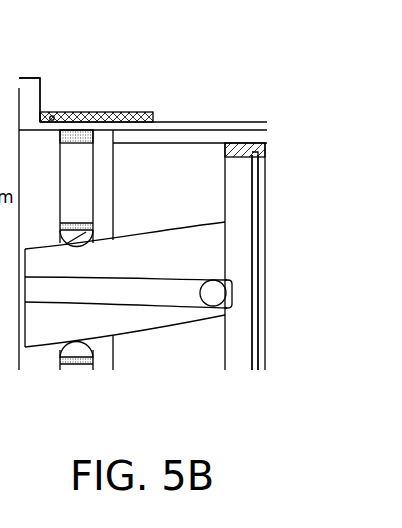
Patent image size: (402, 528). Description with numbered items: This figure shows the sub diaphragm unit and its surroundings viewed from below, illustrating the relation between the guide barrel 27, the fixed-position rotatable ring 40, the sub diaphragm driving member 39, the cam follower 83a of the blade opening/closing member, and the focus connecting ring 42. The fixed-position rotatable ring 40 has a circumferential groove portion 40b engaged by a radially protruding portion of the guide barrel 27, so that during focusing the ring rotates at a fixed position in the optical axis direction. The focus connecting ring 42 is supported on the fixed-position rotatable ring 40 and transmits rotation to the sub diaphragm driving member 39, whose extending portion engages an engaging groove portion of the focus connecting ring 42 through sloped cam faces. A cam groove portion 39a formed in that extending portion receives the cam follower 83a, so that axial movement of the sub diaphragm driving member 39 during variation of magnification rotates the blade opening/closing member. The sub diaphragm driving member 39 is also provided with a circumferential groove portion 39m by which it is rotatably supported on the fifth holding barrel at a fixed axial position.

The guide barrel 27 is at (29, 121).
The circumferential groove portion 40b is at (50, 117).
The focus connecting ring 42 is at (77, 140).
The fixed-position rotatable ring 40 is at (135, 118).
The cam groove portion 39a is at (145, 293).
The sub diaphragm driving member 39 is at (250, 145).
The circumferential groove portion 39m is at (255, 213).
The cam follower 83a is at (220, 293).